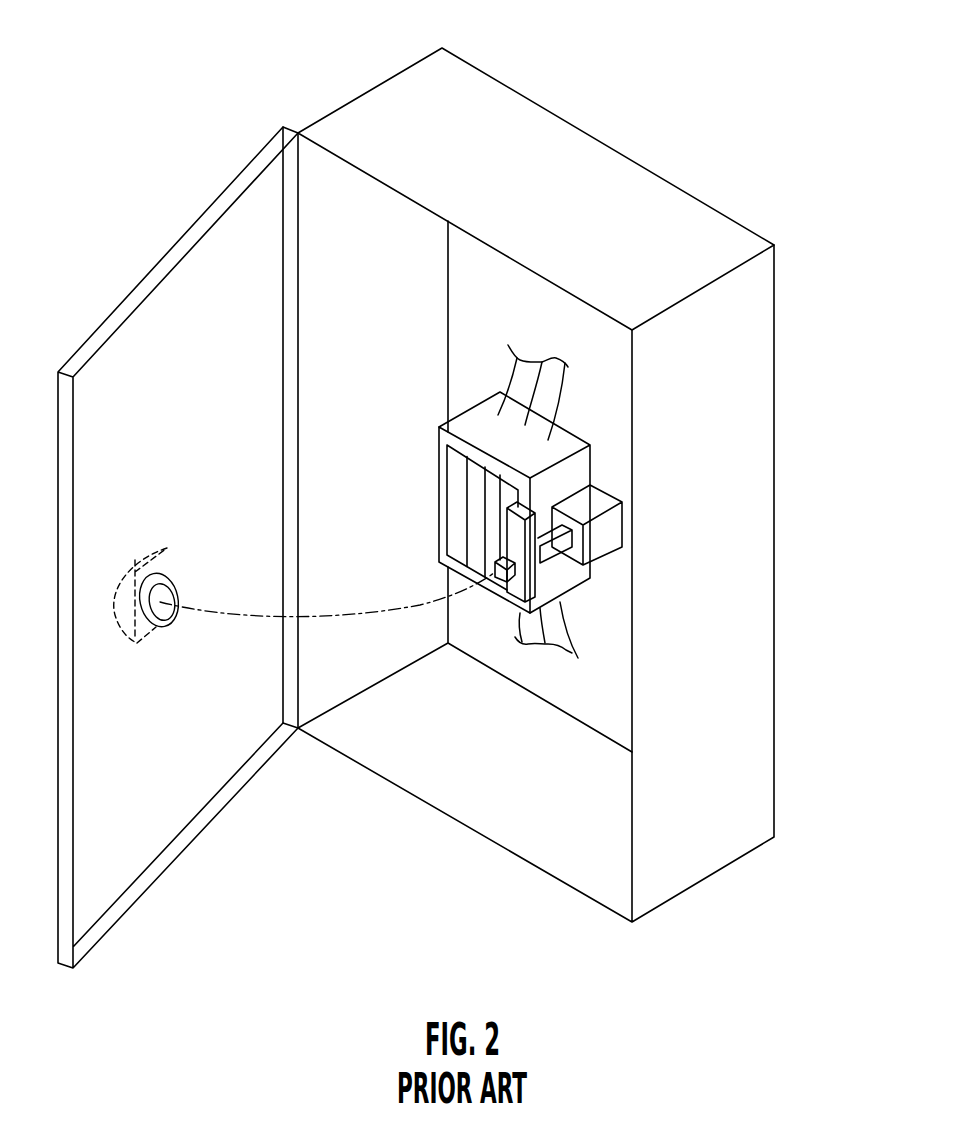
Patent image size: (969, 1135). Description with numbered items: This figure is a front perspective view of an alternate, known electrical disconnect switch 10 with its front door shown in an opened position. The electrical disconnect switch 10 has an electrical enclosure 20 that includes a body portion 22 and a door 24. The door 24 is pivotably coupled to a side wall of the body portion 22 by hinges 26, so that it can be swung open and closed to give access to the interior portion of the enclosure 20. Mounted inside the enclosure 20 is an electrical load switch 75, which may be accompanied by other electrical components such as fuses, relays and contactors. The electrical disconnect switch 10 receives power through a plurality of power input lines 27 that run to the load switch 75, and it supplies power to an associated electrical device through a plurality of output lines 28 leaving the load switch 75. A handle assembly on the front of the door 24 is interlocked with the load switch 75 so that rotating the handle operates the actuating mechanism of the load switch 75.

The electrical disconnect switch 10 is at (743, 120).
The electrical enclosure 20 is at (755, 792).
The body portion 22 is at (477, 96).
The door 24 is at (152, 268).
The hinges 26 is at (298, 133).
The power input lines 27 is at (568, 382).
The output lines 28 is at (553, 627).
The electrical load switch 75 is at (582, 470).